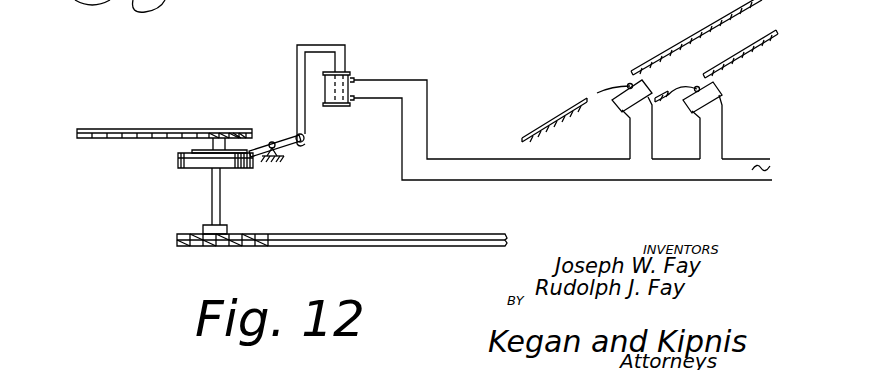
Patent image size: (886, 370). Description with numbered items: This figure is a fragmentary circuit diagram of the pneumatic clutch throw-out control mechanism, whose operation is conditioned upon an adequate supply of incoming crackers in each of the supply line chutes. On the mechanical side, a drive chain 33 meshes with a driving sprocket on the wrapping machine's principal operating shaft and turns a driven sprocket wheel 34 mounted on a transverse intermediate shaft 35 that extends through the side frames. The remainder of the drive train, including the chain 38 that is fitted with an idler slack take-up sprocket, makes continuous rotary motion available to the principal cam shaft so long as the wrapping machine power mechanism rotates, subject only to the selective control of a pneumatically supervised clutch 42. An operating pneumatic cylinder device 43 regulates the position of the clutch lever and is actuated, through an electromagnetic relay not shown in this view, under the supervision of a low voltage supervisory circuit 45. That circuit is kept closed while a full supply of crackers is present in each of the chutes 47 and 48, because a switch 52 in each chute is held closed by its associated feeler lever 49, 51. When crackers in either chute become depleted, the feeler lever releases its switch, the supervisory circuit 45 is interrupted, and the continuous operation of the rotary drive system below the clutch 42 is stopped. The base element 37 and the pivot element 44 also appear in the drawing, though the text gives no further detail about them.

The drive chain 33 is at (123, 139).
The driven sprocket wheel 34 is at (236, 132).
The transverse intermediate shaft 35 is at (212, 197).
The base block 37 is at (192, 246).
The chain 38 is at (330, 235).
The clutch 42 is at (245, 171).
The operating pneumatic cylinder device 43 is at (347, 106).
The pivot pin 44 is at (275, 141).
The low voltage supervisory circuit 45 is at (477, 140).
The chute 47 is at (733, 13).
The chute 48 is at (747, 48).
The feeler lever 49 is at (597, 93).
The feeler lever 51 is at (669, 92).
The switch 52 is at (620, 108).